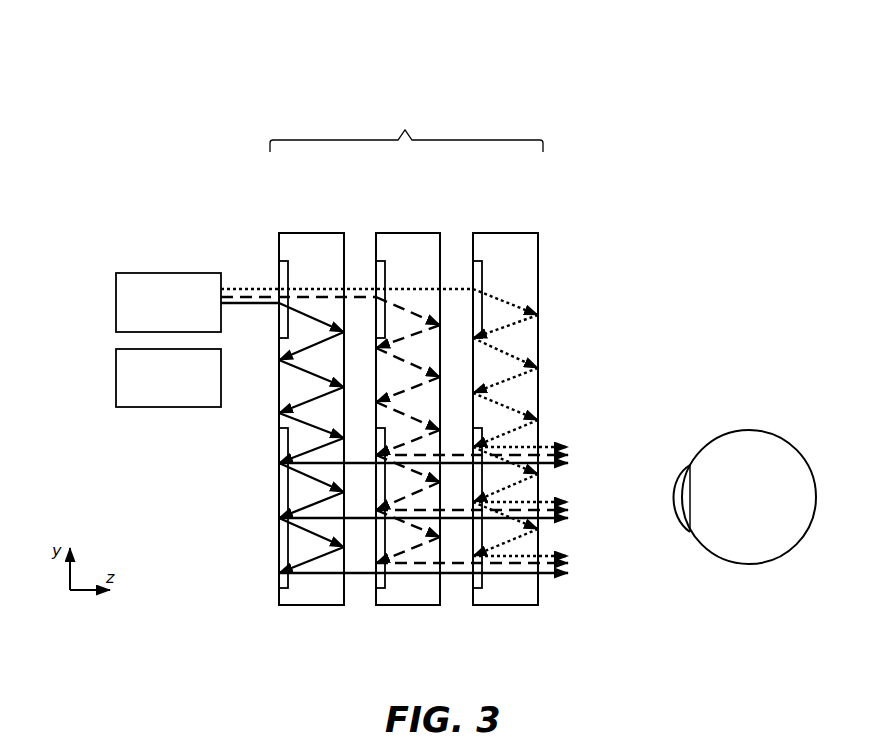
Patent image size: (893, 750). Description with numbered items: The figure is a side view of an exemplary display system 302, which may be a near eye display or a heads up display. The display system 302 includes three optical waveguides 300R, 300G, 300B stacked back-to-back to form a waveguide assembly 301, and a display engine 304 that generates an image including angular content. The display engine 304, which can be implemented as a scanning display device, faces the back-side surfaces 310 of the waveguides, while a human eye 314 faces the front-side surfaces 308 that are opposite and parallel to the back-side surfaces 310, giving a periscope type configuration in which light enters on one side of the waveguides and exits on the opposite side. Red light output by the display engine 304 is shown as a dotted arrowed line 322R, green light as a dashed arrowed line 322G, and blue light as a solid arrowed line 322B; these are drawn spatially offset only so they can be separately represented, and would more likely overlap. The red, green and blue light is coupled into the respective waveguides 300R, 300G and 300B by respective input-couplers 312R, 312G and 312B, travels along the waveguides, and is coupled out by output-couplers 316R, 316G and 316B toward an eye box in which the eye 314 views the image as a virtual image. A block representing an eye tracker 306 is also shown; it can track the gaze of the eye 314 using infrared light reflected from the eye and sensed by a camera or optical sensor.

The display system 302 is at (246, 66).
The waveguide assembly 301 is at (406, 131).
The optical waveguide 300B is at (301, 233).
The optical waveguide 300G is at (399, 233).
The optical waveguide 300R is at (496, 233).
The display engine 304 is at (188, 273).
The eye tracker 306 is at (140, 407).
The front-side surfaces 308 is at (346, 266).
The back-side surfaces 310 is at (279, 378).
The input-coupler 312B is at (279, 262).
The input-coupler 312G is at (376, 262).
The input-coupler 312R is at (473, 262).
The human eye 314 is at (740, 432).
The output-coupler 316B is at (279, 590).
The output-coupler 316G is at (376, 590).
The output-coupler 316R is at (473, 590).
The dotted arrowed line 322R is at (242, 288).
The dashed arrowed line 322G is at (233, 300).
The solid arrowed line 322B is at (252, 306).